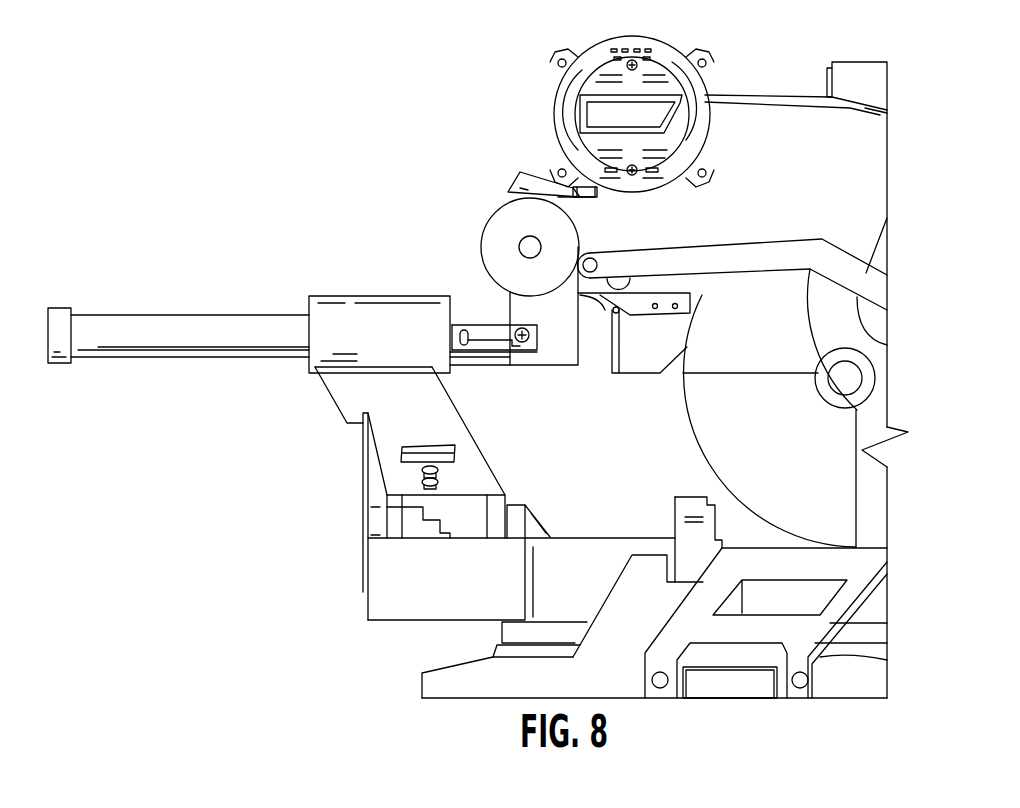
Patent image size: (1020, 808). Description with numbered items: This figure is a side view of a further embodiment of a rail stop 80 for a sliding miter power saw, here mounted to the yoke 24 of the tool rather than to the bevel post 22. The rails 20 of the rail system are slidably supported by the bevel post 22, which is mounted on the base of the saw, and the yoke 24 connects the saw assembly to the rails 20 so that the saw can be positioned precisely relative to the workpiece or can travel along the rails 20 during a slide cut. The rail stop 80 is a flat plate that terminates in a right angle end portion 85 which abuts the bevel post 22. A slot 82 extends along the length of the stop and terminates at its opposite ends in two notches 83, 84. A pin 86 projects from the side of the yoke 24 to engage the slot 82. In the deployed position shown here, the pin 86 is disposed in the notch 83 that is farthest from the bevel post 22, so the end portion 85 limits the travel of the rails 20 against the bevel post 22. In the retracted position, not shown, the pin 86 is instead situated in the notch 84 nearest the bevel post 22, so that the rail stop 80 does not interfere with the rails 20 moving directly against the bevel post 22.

The rail system 20 is at (158, 328).
The bevel post 22 is at (352, 390).
The yoke 24 is at (507, 218).
The rail stop 80 is at (482, 320).
The slot 82 is at (487, 343).
The notch 83 is at (535, 349).
The notch 84 is at (462, 345).
The right angle end portion 85 is at (452, 325).
The pin 86 is at (525, 326).